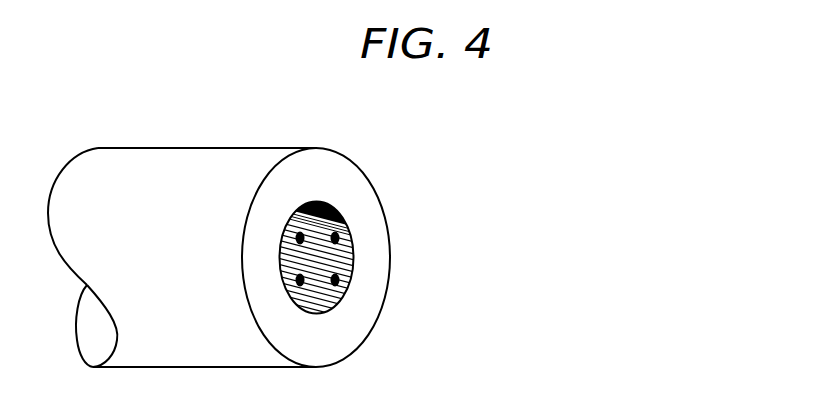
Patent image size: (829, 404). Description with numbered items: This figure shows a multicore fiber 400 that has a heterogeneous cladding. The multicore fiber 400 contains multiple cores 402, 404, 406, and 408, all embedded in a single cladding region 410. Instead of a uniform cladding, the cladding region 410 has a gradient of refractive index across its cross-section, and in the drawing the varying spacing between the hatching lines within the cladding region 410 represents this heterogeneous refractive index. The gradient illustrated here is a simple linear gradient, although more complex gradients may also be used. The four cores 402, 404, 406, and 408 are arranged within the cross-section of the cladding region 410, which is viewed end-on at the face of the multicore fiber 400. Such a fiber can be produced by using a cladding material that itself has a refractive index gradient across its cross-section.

The multicore fiber 400 is at (180, 128).
The core 402 is at (293, 231).
The core 404 is at (344, 231).
The core 406 is at (296, 280).
The core 408 is at (338, 283).
The cladding region 410 is at (357, 250).